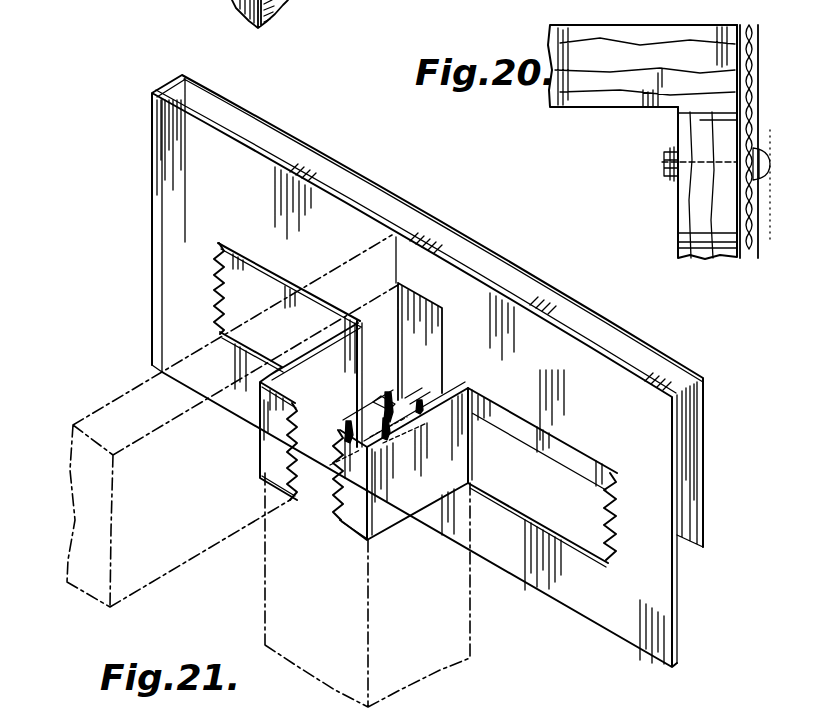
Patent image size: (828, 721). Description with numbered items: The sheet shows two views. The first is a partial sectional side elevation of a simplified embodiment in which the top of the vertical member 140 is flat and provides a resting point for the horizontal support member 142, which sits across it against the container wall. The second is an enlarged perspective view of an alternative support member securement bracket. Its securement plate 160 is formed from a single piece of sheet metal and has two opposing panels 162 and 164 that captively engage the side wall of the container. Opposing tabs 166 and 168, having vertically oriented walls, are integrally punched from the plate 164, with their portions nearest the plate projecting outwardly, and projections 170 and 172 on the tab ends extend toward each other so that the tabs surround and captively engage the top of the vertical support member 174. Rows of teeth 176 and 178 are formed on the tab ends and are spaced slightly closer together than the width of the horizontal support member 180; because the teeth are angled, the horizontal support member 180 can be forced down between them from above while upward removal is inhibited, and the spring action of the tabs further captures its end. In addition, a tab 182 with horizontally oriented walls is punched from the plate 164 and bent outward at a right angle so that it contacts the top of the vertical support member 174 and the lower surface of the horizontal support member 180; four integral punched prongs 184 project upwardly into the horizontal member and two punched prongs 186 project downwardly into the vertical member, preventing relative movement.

In FIG. 20, the vertical framing member (stud) 140 is at (678, 222).
In FIG. 20, the horizontal support member 142 is at (647, 75).
In FIG. 21, the securement plate 160 is at (653, 357).
In FIG. 21, the opposing panel 162 is at (703, 452).
In FIG. 21, the plate 164 is at (655, 427).
In FIG. 21, the tab 166 is at (440, 514).
In FIG. 21, the tab 168 is at (333, 389).
In FIG. 21, the projection 170 is at (355, 520).
In FIG. 21, the projection 172 is at (293, 497).
In FIG. 21, the vertical support member 174 is at (460, 637).
In FIG. 21, the row of teeth 176 is at (340, 510).
In FIG. 21, the row of teeth 178 is at (300, 497).
In FIG. 21, the horizontal support member 180 is at (170, 572).
In FIG. 21, the tab 182 is at (370, 413).
In FIG. 21, the integral punched prong 184 is at (423, 400).
In FIG. 21, the integral punched prong 186 is at (397, 417).